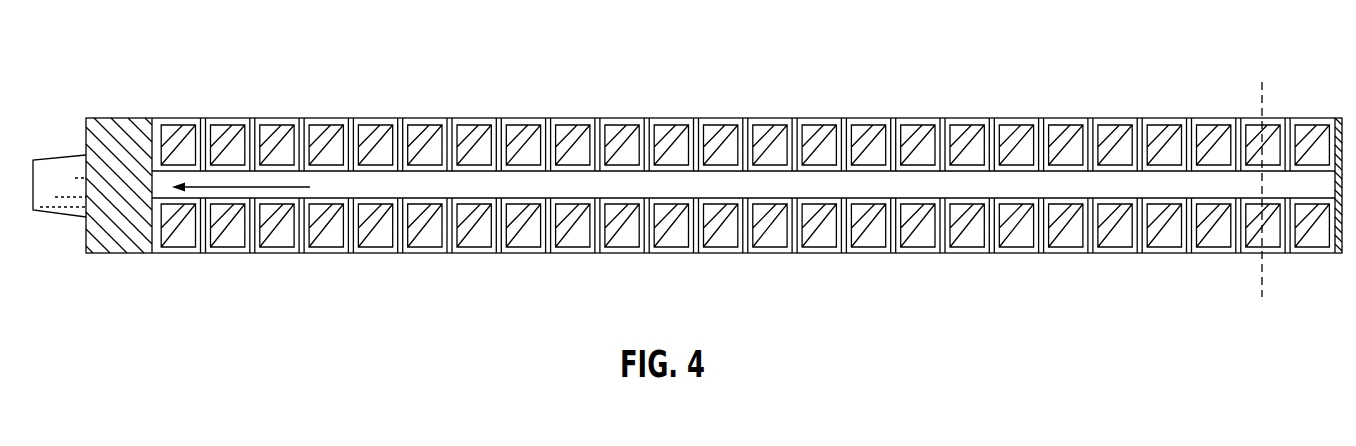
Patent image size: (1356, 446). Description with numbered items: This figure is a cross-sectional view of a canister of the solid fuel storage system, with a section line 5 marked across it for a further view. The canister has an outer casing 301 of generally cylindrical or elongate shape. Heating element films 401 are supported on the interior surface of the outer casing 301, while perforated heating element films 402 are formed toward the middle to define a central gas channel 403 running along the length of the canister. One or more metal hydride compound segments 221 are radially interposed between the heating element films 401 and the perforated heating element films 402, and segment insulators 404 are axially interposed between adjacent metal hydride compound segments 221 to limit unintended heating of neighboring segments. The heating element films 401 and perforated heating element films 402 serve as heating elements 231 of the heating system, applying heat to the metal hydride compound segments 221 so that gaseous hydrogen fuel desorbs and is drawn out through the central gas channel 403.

The outer casing 301 is at (228, 253).
The heating element films 401 is at (388, 253).
The perforated heating element films 402 is at (427, 198).
The central gas channel 403 is at (780, 187).
The segment insulators 404 is at (848, 250).
The metal hydride compound segments 221 is at (583, 246).
The heating elements 231 is at (783, 245).
The section line 5- 5 is at (1304, 296).